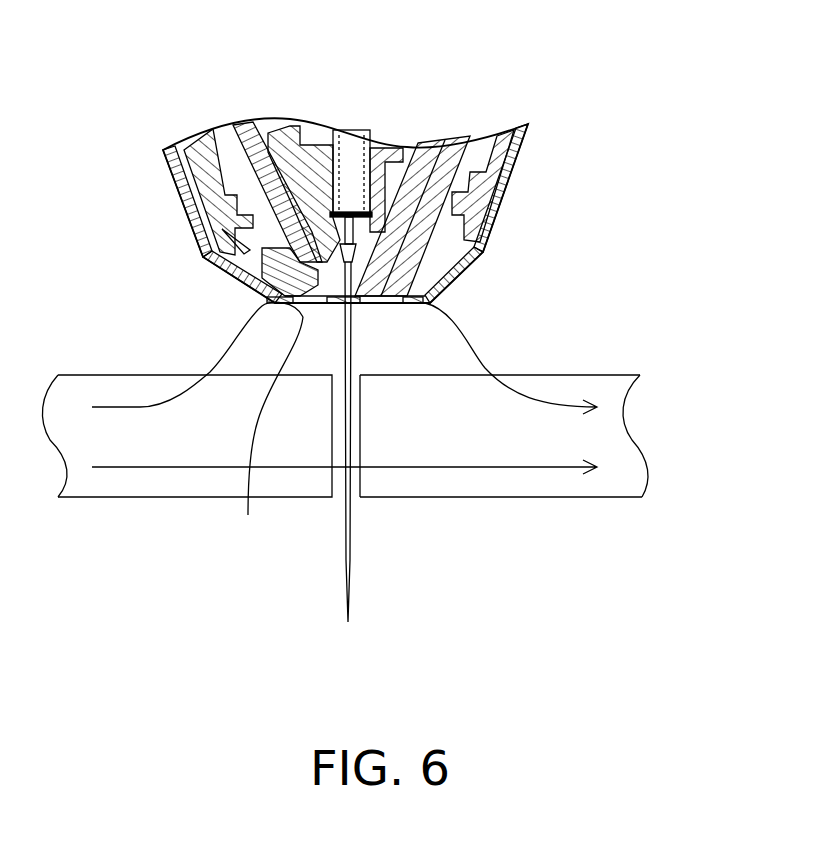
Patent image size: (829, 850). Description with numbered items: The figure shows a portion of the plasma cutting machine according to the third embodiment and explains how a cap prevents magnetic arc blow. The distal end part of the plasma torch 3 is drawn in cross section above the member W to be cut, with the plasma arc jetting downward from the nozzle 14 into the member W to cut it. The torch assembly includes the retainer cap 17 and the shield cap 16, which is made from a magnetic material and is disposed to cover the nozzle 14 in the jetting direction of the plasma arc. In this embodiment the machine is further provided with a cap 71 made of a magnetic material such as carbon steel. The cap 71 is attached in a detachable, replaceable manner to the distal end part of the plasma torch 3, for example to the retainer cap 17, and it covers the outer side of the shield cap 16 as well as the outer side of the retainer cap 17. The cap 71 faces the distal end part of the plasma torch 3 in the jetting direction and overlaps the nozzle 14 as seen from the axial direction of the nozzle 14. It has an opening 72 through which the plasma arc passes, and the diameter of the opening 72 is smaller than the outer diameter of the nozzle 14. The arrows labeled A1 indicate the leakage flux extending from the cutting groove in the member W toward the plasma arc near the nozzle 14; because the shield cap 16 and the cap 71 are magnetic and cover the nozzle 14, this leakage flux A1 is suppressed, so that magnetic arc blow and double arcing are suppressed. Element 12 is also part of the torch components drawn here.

The plasma torch 3 is at (455, 128).
The retainer cap 17 is at (202, 163).
The cap 71 is at (206, 220).
The shield cap 16 is at (238, 275).
The housing wall 12 is at (478, 228).
The nozzle 14 is at (383, 250).
The opening 72 is at (412, 427).
The member to be cut W is at (70, 380).
The leakage flux A1 is at (222, 348).